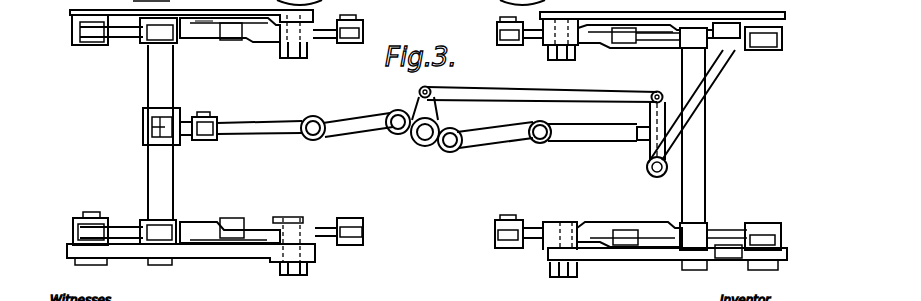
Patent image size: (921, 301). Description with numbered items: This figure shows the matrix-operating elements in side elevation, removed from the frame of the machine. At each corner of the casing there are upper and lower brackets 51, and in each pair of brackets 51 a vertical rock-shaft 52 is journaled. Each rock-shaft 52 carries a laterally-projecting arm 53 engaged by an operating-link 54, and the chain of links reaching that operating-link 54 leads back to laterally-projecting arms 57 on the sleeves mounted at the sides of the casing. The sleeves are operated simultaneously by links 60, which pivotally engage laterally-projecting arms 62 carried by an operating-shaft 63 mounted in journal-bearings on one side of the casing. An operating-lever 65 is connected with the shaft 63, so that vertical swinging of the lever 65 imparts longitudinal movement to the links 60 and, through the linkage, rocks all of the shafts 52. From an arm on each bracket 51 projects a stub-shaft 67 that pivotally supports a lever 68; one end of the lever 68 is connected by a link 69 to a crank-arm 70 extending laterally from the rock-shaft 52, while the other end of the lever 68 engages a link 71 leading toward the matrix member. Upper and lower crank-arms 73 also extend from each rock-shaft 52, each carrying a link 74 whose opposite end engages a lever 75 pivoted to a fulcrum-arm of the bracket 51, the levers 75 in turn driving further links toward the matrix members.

The bracket 51 is at (178, 253).
The vertical rock-shaft 52 is at (167, 80).
The laterally-projecting arm 53 is at (157, 128).
The operating-link 54 is at (192, 116).
The laterally-projecting arm 57 is at (707, 183).
The link 60 is at (589, 89).
The laterally-projecting arm 62 is at (648, 110).
The operating-shaft 63 is at (652, 174).
The operating-lever 65 is at (717, 82).
The stub-shaft 67 is at (300, 56).
The lever 68 is at (320, 40).
The link 69 is at (227, 33).
The crank-arm 70 is at (204, 24).
The link 71 is at (503, 33).
The crank-arm 73 is at (153, 45).
The link 74 is at (127, 34).
The lever 75 is at (82, 47).